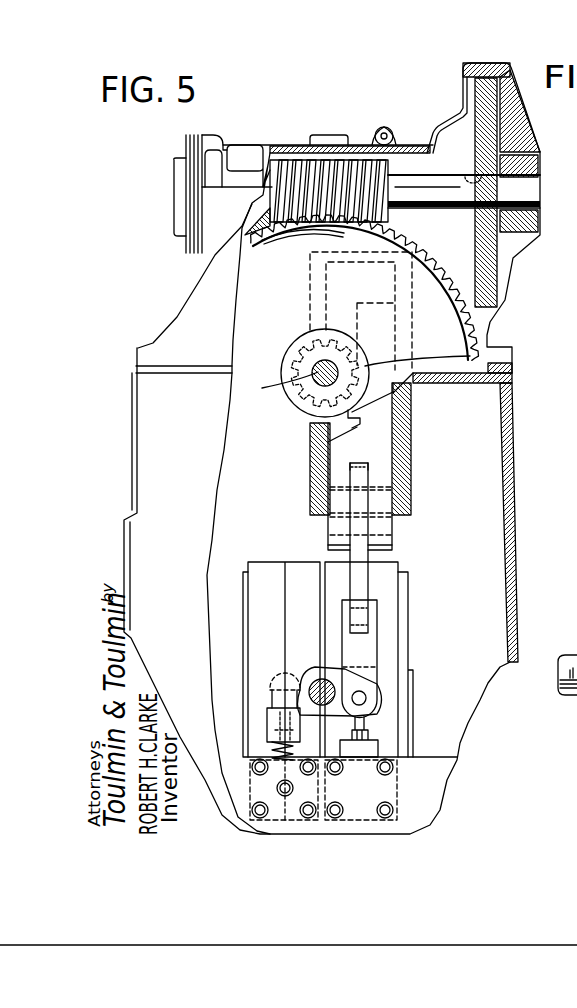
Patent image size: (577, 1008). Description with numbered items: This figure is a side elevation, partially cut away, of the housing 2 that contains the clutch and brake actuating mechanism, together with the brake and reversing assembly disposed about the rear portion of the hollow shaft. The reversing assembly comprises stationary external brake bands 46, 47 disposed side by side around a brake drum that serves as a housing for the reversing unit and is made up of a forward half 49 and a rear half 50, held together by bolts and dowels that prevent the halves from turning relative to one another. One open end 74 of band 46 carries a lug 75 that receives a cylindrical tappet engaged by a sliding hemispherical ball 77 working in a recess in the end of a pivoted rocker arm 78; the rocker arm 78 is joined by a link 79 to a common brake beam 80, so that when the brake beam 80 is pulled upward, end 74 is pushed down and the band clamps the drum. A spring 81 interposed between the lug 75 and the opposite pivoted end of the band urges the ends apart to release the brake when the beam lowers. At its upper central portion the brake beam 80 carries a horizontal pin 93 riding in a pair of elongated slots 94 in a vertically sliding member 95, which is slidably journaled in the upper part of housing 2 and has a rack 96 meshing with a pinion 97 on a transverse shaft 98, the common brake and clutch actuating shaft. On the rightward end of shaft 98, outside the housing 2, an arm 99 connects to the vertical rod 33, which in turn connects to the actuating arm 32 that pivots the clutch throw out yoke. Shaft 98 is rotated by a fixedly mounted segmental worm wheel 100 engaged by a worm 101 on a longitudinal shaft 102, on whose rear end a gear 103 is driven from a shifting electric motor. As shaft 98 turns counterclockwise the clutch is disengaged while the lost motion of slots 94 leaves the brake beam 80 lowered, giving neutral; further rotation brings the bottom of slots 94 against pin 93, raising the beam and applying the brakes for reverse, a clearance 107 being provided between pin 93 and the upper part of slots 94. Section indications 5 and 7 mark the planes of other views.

The housing 2 is at (510, 468).
The section line 5 is at (576, 836).
The section line 7 is at (260, 655).
The actuating arm 32 is at (566, 722).
The rod 33 is at (569, 548).
The brake band 46 is at (257, 566).
The brake band 47 is at (398, 563).
The forward half 49 is at (245, 590).
The rear half 50 is at (405, 597).
The open end 74 is at (262, 694).
The lug 75 is at (268, 722).
The sliding hemispherical ball 77 is at (270, 672).
The rocker arm 78 is at (305, 665).
The link 79 is at (370, 650).
The brake beam 80 is at (365, 590).
The spring 81 is at (270, 750).
The pin 93 is at (393, 500).
The elongated slots 94 is at (385, 531).
The vertically sliding member 95 is at (395, 450).
The rack 96 is at (354, 425).
The pinion 97 is at (302, 416).
The shaft 98 is at (325, 373).
The arm 99 is at (568, 303).
The segmental worm wheel 100 is at (440, 262).
The worm 101 is at (388, 174).
The longitudinal shaft 102 is at (443, 176).
The gear 103 is at (473, 132).
The clearance 107 is at (360, 465).